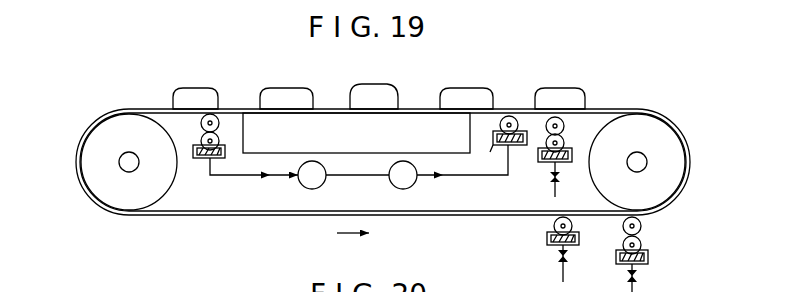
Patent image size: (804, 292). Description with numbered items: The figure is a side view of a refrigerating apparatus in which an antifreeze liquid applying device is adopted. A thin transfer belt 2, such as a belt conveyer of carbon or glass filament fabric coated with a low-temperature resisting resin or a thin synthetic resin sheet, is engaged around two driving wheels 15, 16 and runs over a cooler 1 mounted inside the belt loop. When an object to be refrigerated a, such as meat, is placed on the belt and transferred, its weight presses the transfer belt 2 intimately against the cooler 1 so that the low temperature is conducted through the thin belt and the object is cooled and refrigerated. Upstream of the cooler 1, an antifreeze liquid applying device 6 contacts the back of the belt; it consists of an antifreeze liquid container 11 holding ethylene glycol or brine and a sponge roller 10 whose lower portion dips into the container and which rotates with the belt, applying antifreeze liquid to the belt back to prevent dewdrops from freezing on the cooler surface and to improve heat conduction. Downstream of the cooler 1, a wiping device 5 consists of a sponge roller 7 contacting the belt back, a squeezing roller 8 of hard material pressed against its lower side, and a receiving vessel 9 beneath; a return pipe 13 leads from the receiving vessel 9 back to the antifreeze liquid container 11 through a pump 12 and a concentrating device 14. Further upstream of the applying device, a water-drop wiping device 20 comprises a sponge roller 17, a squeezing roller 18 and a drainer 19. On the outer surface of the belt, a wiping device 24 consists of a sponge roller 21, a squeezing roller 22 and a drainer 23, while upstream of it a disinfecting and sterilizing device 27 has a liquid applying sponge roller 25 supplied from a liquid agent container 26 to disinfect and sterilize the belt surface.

The cooler 1 is at (417, 117).
The transfer belt 2 is at (449, 215).
The wiping device 5 is at (203, 160).
The antifreeze liquid applying device 6 is at (517, 148).
The sponge roller 7 is at (218, 117).
The squeezing roller 8 is at (201, 138).
The receiving vessel 9 is at (224, 153).
The sponge roller 10 is at (518, 118).
The antifreeze liquid container 11 is at (487, 160).
The pump 12 is at (312, 189).
The return pipe 13 is at (483, 178).
The concentrating device 14 is at (403, 189).
The driving wheel 15 is at (93, 134).
The driving wheel 16 is at (684, 139).
The sponge roller 17 is at (563, 123).
The squeezing roller 18 is at (564, 141).
The drainer 19 is at (572, 157).
The water-drop wiping device 20 is at (566, 168).
The sponge roller 21 is at (641, 223).
The squeezing roller 22 is at (642, 244).
The drainer 23 is at (648, 262).
The wiping device 24 is at (617, 268).
The liquid applying sponge roller 25 is at (553, 223).
The liquid agent container 26 is at (576, 245).
The disinfecting and sterilizing device 27 is at (542, 248).
The object to be refrigerated a is at (351, 87).